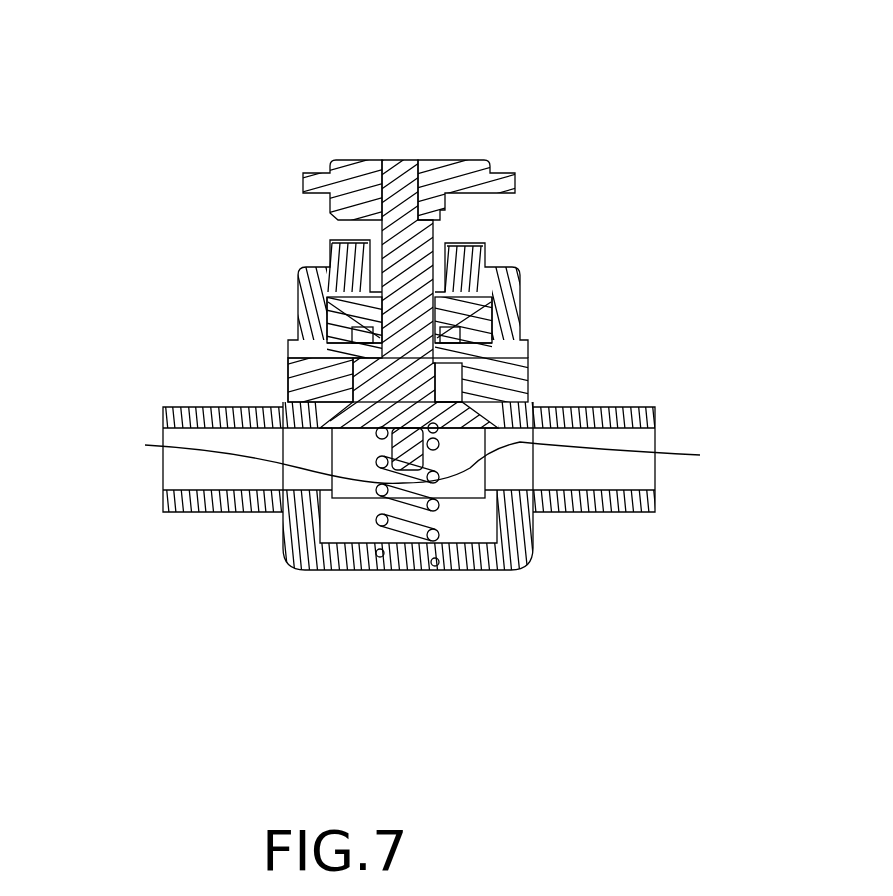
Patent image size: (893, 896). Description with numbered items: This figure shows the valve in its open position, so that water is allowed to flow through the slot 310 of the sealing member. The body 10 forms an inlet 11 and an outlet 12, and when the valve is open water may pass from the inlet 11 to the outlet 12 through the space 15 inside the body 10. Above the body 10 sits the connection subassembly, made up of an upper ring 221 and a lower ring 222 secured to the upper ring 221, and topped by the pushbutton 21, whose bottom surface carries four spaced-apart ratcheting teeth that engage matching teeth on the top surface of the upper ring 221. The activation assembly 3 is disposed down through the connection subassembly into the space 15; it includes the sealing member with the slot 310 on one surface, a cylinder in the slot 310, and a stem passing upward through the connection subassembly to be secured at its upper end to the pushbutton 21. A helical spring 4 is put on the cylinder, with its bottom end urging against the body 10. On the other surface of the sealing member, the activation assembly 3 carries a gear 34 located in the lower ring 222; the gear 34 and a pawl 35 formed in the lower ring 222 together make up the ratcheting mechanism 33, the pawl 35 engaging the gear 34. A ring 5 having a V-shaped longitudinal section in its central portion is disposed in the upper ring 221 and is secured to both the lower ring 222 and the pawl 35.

The activation assembly 3 is at (412, 178).
The pushbutton 21 is at (357, 203).
The upper ring 221 is at (473, 263).
The lower ring 222 is at (515, 393).
The ring 5 is at (488, 305).
The ratcheting mechanism 33 is at (187, 298).
The gear 34 is at (347, 382).
The pawl 35 is at (370, 385).
The body 10 is at (487, 550).
The inlet 11 is at (160, 460).
The outlet 12 is at (657, 458).
The space 15 is at (350, 530).
The slot 310 is at (338, 480).
The helical spring 4 is at (401, 500).